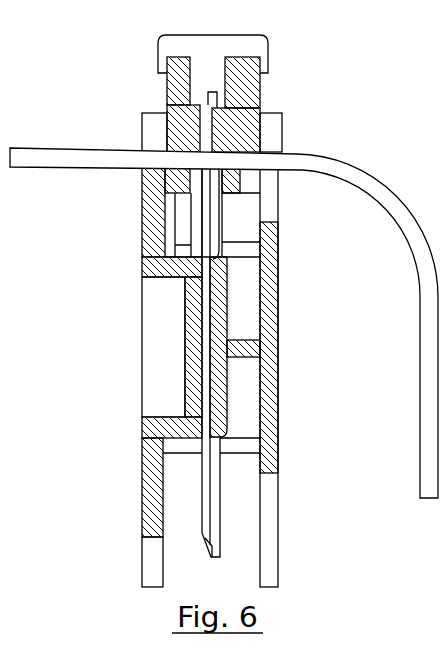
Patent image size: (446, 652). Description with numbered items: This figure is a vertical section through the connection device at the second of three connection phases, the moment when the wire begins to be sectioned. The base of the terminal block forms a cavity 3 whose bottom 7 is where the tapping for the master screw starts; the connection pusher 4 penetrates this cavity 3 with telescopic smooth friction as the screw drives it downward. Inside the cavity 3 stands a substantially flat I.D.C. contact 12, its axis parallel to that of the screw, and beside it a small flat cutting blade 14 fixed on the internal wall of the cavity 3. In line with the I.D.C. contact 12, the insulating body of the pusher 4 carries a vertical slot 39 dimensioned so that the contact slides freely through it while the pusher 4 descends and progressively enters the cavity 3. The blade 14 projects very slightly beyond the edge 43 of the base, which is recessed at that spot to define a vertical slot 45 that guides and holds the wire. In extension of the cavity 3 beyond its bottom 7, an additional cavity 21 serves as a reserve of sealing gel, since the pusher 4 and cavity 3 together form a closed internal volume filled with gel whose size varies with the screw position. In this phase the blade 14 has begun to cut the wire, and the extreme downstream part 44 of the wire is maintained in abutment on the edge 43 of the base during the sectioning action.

The cavity 3 is at (247, 223).
The connection pusher 4 is at (240, 82).
The bottom of the cavity 7 is at (247, 257).
The I.D.C. contact 12 is at (215, 207).
The cutting blade 14 is at (142, 207).
The additional cavity 21 is at (248, 315).
The vertical slot 39 is at (188, 108).
The edge of the base 43 is at (143, 177).
The extreme downstream part of the wire 44 is at (75, 147).
The vertical slot 45 is at (154, 126).